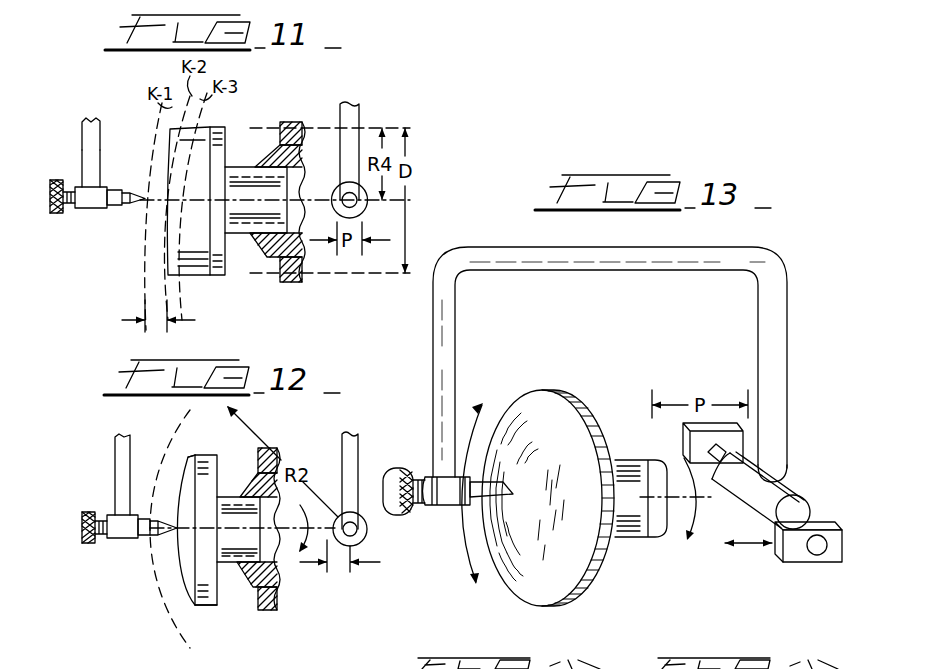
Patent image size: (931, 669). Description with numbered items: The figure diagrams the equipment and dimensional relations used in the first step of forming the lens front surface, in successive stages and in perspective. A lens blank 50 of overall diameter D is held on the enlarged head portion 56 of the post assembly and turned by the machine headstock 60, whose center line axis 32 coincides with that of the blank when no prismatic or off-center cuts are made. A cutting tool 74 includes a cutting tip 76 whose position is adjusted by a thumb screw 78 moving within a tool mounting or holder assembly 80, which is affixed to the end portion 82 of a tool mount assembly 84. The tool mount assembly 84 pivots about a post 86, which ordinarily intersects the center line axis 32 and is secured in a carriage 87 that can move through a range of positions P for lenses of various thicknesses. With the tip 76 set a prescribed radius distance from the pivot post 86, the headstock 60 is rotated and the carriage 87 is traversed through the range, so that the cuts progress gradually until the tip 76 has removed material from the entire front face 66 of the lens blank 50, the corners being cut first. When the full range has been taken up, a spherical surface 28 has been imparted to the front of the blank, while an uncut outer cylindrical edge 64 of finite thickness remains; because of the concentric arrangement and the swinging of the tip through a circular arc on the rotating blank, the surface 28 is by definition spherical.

In FIG. 12, the spherical surface 28 is at (176, 556).
In FIG. 13, the spherical surface 28 is at (512, 573).
In FIG. 11, the center line axis 32 is at (243, 176).
In FIG. 11, the lens blank 50 is at (140, 132).
In FIG. 12, the lens blank 50 is at (187, 619).
In FIG. 12, the enlarged head portion 56 is at (233, 608).
In FIG. 11, the machine headstock 60 is at (292, 122).
In FIG. 11, the outer cylindrical edge 64 is at (211, 277).
In FIG. 12, the outer cylindrical edge 64 is at (197, 455).
In FIG. 11, the front face 66 is at (168, 232).
In FIG. 11, the cutting tool 74 is at (84, 215).
In FIG. 11, the cutting tip 76 is at (140, 204).
In FIG. 11, the thumb screw 78 is at (58, 180).
In FIG. 11, the tool mounting or holder assembly 80 is at (90, 184).
In FIG. 11, the end portion 82 is at (92, 118).
In FIG. 11, the tool mount assembly 84 is at (356, 114).
In FIG. 11, the post 86 is at (333, 190).
In FIG. 13, the post 86 is at (818, 545).
In FIG. 13, the carriage 87 is at (681, 443).